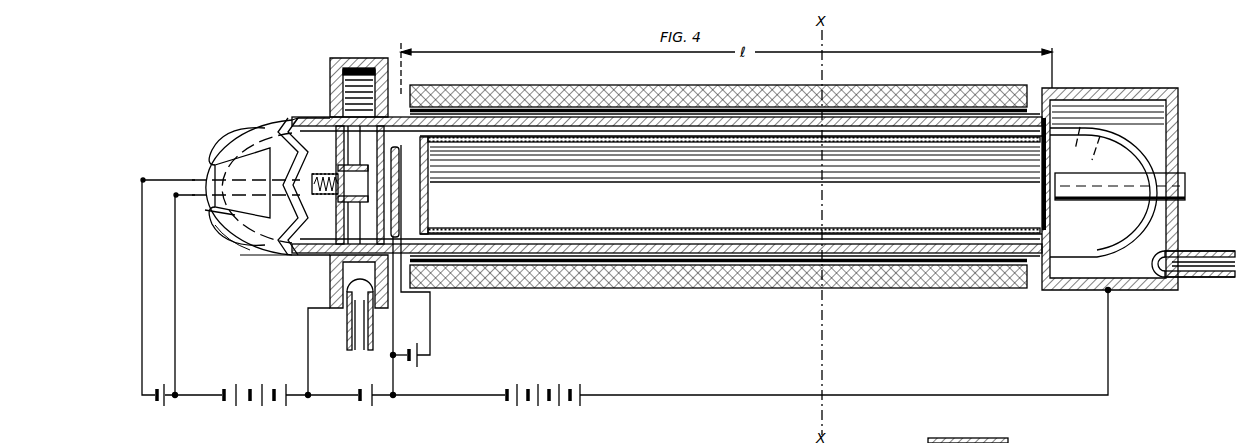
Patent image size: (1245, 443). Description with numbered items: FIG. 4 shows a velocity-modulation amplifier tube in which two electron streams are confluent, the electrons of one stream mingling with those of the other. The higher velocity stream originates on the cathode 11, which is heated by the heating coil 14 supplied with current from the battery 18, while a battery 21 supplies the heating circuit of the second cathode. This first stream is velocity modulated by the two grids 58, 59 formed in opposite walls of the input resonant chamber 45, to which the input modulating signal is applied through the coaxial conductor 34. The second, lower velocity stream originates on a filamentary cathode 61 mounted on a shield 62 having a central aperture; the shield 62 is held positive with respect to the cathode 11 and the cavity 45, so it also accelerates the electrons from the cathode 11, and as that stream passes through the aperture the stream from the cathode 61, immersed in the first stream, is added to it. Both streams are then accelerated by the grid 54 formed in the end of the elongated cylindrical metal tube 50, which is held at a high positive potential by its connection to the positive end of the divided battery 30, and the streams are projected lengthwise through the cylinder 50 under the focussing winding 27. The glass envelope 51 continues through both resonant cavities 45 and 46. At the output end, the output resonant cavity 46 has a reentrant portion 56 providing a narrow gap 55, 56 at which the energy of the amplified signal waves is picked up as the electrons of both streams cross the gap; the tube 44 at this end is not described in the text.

The cathode 11 is at (367, 165).
The heating coil 14 is at (327, 197).
The battery 18 is at (166, 400).
The battery 21 is at (414, 345).
The focussing winding 27 is at (488, 88).
The divided battery 30 is at (530, 404).
The coaxial conductor 34 is at (360, 357).
The outlet tube 44 is at (1220, 276).
The input resonant cavity 45 is at (343, 78).
The output resonant cavity 46 is at (1160, 127).
The elongated cylindrical metal tube 50 is at (787, 233).
The glass envelope 51 is at (918, 248).
The accelerating grid 54 is at (430, 186).
The gap 55 is at (1042, 190).
The reentrant portion 56 is at (1188, 186).
The grid 58 is at (338, 159).
The grid 59 is at (366, 115).
The filamentary cathode 61 is at (420, 200).
The shield 62 is at (432, 156).